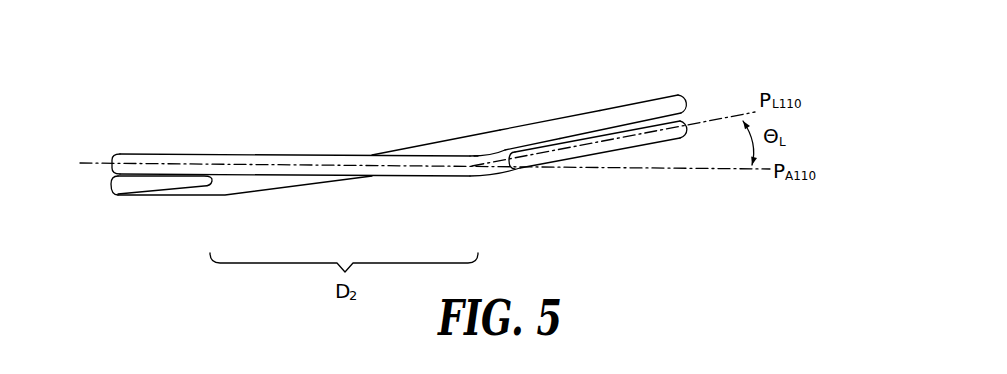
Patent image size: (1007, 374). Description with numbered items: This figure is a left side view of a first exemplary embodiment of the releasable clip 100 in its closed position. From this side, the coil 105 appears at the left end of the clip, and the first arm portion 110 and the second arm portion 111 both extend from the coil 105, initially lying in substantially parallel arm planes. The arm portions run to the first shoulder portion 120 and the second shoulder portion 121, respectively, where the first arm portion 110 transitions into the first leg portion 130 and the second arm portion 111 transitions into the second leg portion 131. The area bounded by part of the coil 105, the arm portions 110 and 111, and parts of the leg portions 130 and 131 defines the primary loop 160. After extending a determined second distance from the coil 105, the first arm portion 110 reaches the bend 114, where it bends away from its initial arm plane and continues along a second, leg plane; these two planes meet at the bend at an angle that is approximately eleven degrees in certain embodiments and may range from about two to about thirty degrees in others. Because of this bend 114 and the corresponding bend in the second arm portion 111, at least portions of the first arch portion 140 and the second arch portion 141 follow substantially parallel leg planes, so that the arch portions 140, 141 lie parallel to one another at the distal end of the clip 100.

The releasable clip 100 is at (183, 65).
The coil 105 is at (128, 182).
The first arm portion 110 is at (265, 163).
The second arm portion 111 is at (243, 187).
The bend 114 is at (477, 172).
The first shoulder portion 120 is at (430, 170).
The second shoulder portion 121 is at (432, 150).
The first leg portion 130 is at (500, 173).
The second leg portion 131 is at (508, 135).
The first arch portion 140 is at (632, 140).
The second arch portion 141 is at (637, 112).
The primary loop 160 is at (300, 138).